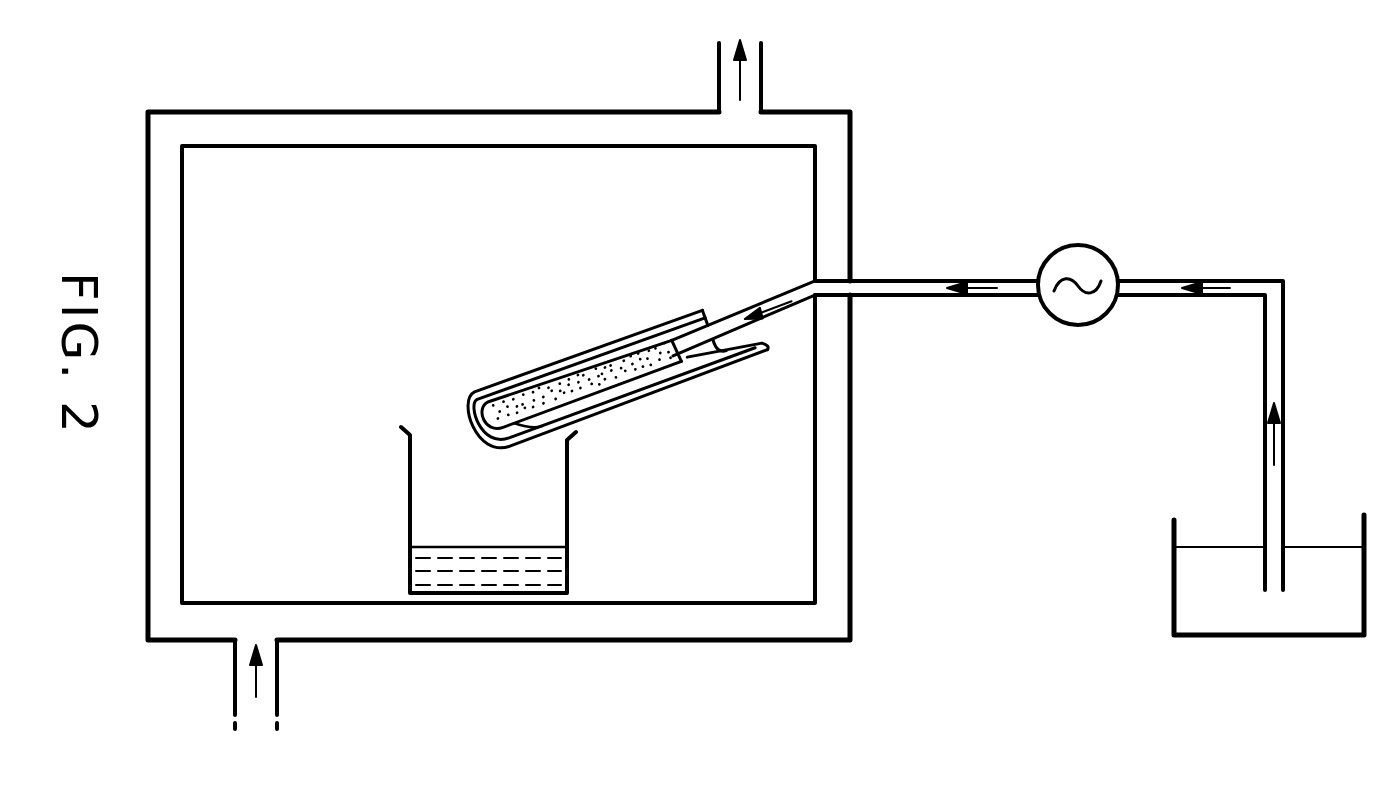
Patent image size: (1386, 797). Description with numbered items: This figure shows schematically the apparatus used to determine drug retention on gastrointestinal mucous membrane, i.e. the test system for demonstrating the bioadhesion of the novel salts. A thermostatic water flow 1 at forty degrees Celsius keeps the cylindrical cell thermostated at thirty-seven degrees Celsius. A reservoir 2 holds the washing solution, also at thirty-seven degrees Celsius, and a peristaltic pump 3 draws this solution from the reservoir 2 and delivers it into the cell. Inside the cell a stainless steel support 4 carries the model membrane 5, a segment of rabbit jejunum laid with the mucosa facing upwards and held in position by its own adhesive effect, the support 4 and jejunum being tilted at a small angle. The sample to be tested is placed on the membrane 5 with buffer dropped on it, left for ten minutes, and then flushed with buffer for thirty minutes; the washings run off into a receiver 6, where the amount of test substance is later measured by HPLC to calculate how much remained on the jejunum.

The thermostatic water flow 1 is at (256, 698).
The reservoir 2 is at (1230, 611).
The peristaltic pump 3 is at (1058, 326).
The stainless steel support 4 is at (623, 403).
The model membrane 5 is at (573, 382).
The receiver 6 is at (410, 510).